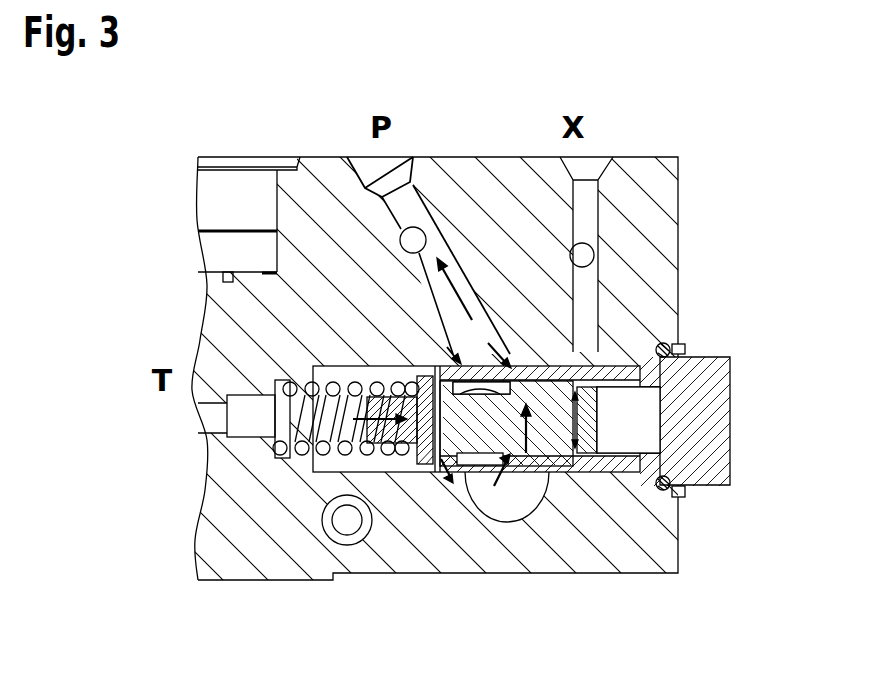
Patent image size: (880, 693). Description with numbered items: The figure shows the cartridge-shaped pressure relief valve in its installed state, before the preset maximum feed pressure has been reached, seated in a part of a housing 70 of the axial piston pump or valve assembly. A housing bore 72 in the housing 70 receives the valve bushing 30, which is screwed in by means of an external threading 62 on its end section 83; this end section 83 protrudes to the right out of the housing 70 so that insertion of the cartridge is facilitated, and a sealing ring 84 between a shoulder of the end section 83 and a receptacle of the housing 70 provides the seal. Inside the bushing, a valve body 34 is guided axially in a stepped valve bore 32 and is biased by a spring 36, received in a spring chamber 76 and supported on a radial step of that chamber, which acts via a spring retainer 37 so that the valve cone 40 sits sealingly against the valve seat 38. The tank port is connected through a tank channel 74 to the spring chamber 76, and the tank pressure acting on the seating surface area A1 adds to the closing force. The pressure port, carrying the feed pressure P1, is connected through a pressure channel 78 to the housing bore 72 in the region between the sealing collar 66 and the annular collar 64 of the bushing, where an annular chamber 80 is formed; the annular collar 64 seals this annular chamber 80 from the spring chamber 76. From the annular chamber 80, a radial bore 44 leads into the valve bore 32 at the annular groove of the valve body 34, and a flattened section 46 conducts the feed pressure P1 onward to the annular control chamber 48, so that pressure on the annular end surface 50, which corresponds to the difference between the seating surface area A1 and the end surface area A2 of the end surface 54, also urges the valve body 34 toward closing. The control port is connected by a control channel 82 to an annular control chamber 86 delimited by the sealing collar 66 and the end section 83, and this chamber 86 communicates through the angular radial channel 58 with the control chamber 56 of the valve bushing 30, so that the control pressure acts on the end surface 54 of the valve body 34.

The valve bushing 30 is at (714, 494).
The stepped valve bore 32 is at (730, 360).
The valve body 34 is at (530, 473).
The spring 36 is at (330, 466).
The spring retainer 37 is at (380, 460).
The valve seat 38 is at (386, 440).
The valve cone 40 is at (465, 445).
The radial bore 44 is at (473, 467).
The flattened section 46 is at (510, 470).
The annular control chamber 48 is at (567, 473).
The annular end surface 50 is at (573, 347).
The end surface 54 is at (600, 453).
The control chamber 56 is at (630, 485).
The angular radial channel 58 is at (602, 354).
The external threading 62 is at (615, 354).
The annular collar 64 is at (457, 357).
The sealing collar 66 is at (571, 345).
The housing 70 is at (253, 322).
The housing bore 72 is at (628, 354).
The tank channel 74 is at (218, 417).
The spring chamber 76 is at (380, 470).
The pressure channel 78 is at (410, 210).
The annular chamber 80 is at (543, 354).
The control channel 82 is at (590, 205).
The end section 83 is at (700, 440).
The sealing ring 84 is at (670, 348).
The annular control chamber 86 is at (597, 354).
The feed pressure P1 is at (450, 300).
The seating surface area A1 is at (417, 406).
The end surface area A2 is at (600, 392).